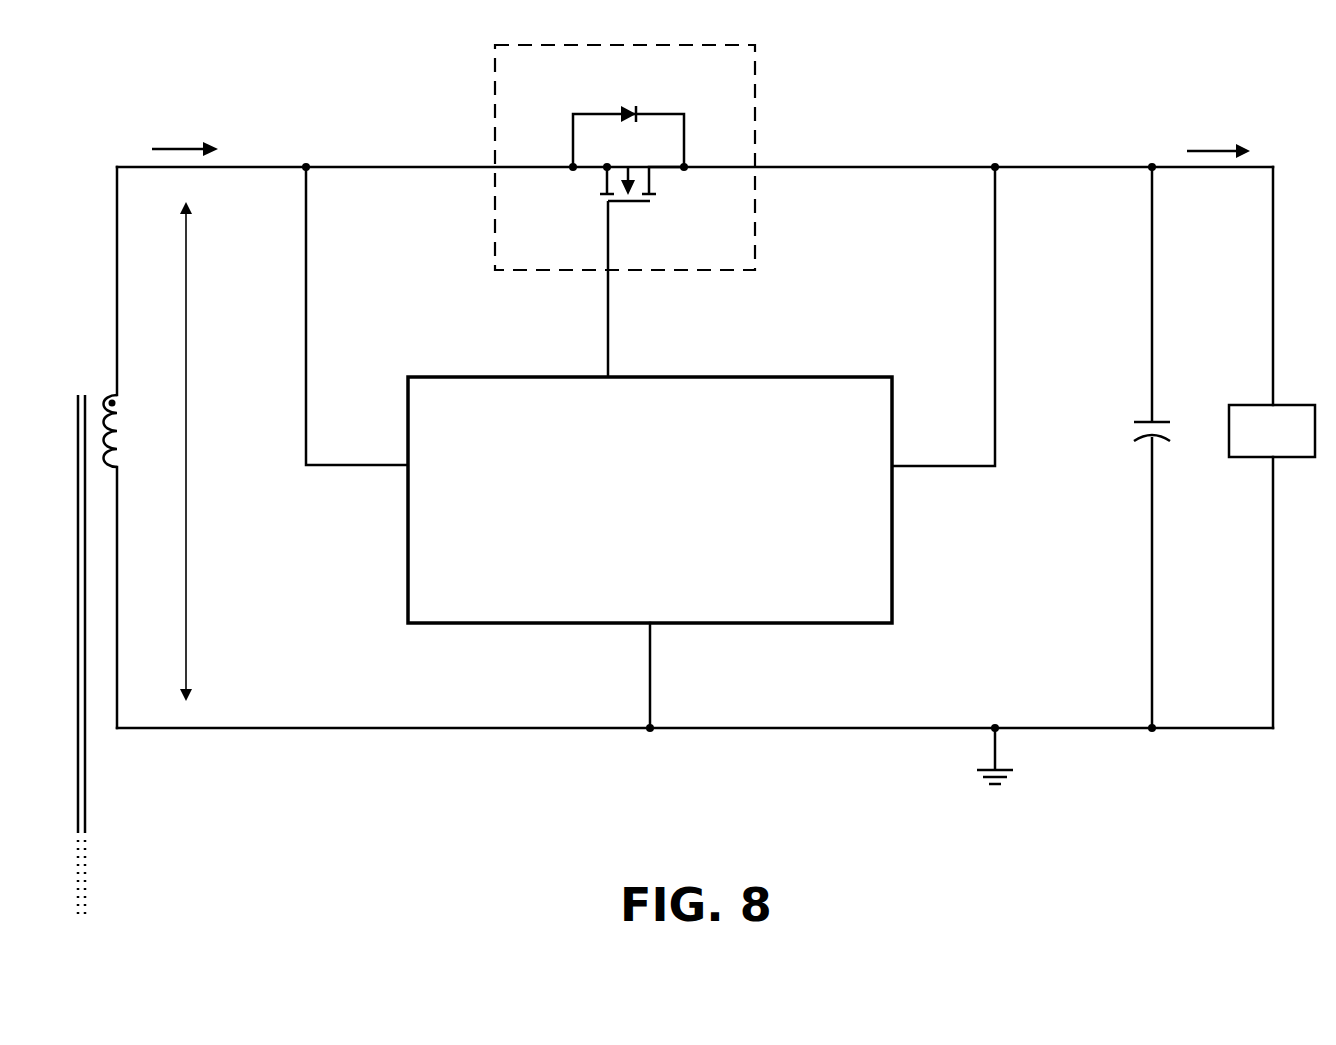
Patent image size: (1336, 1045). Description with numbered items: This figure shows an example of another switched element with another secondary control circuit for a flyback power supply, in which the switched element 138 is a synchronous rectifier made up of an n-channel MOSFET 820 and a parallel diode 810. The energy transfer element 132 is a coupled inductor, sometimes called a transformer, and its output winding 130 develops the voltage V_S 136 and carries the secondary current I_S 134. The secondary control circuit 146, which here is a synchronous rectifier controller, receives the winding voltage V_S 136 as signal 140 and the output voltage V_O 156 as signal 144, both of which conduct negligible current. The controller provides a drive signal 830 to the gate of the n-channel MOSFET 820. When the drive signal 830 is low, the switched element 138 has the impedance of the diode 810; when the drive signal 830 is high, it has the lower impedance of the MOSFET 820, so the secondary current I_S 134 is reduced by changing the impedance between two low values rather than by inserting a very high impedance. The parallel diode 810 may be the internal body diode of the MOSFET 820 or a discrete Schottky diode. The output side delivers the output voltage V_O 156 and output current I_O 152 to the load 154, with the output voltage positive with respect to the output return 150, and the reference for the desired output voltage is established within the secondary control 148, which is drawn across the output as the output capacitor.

The output winding 130 is at (118, 447).
The energy transfer element L1 132 is at (92, 780).
The secondary current I_S 134 is at (158, 138).
The voltage V_S 136 is at (200, 452).
The switched element 138 is at (492, 88).
The signal 140 is at (310, 270).
The signal 144 is at (1000, 262).
The secondary control circuit 146 is at (484, 370).
The secondary control 148 is at (1140, 452).
The output return 150 is at (1013, 748).
The output current I_O 152 is at (1193, 140).
The load 154 is at (1285, 396).
The output voltage V_O 156 is at (1200, 448).
The parallel diode 810 is at (621, 100).
The n-channel MOSFET 820 is at (638, 210).
The drive signal 830 is at (617, 322).